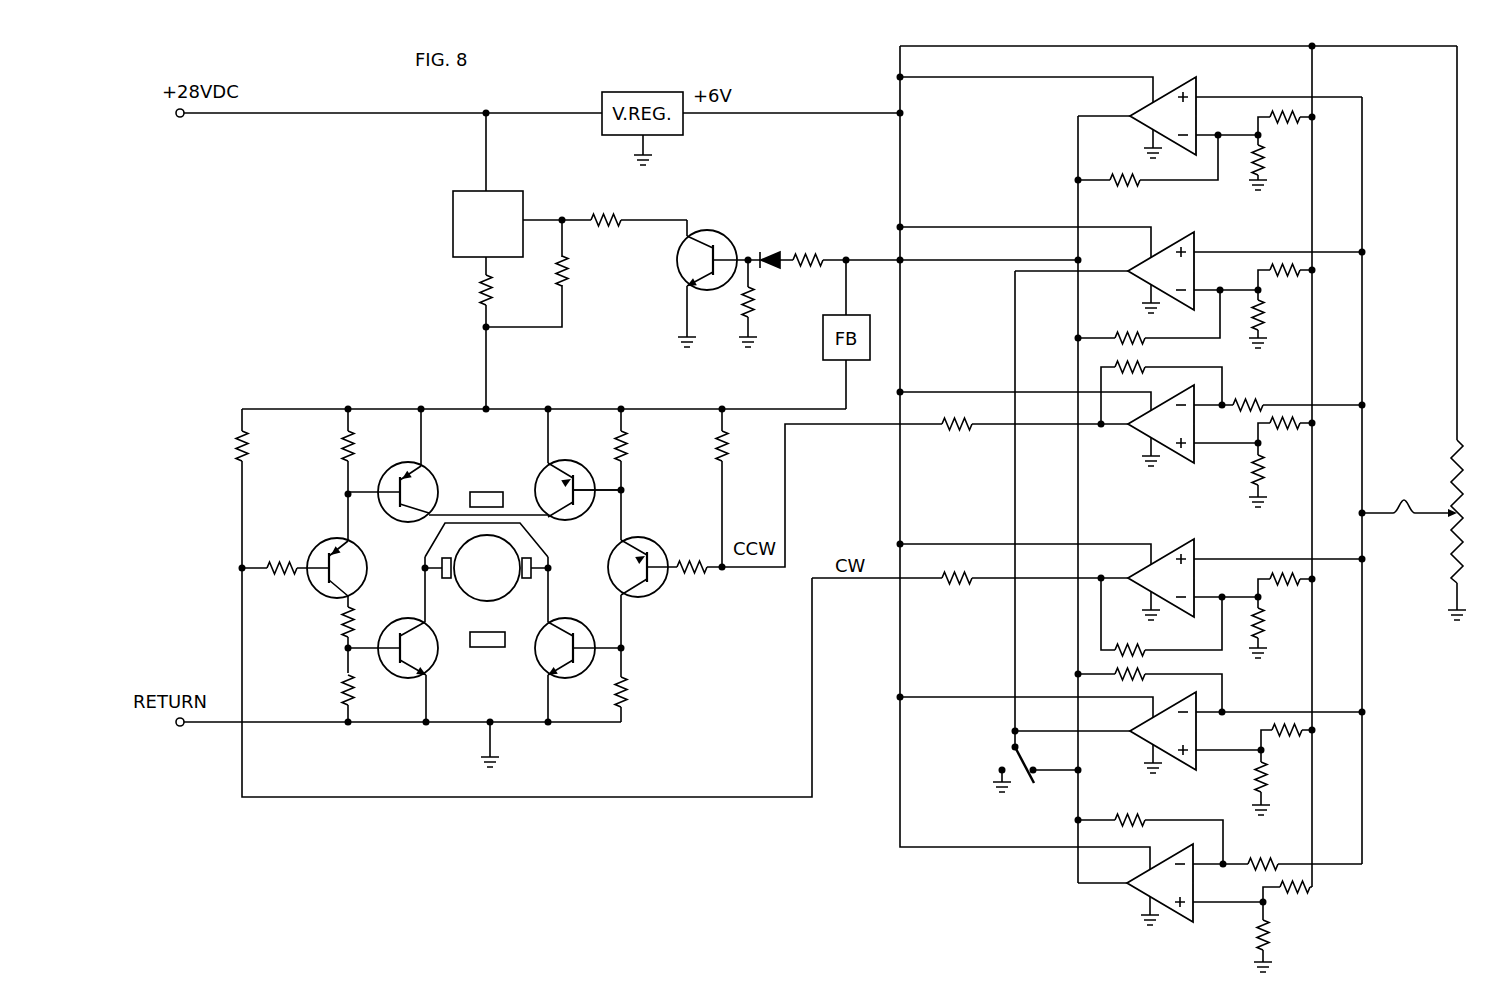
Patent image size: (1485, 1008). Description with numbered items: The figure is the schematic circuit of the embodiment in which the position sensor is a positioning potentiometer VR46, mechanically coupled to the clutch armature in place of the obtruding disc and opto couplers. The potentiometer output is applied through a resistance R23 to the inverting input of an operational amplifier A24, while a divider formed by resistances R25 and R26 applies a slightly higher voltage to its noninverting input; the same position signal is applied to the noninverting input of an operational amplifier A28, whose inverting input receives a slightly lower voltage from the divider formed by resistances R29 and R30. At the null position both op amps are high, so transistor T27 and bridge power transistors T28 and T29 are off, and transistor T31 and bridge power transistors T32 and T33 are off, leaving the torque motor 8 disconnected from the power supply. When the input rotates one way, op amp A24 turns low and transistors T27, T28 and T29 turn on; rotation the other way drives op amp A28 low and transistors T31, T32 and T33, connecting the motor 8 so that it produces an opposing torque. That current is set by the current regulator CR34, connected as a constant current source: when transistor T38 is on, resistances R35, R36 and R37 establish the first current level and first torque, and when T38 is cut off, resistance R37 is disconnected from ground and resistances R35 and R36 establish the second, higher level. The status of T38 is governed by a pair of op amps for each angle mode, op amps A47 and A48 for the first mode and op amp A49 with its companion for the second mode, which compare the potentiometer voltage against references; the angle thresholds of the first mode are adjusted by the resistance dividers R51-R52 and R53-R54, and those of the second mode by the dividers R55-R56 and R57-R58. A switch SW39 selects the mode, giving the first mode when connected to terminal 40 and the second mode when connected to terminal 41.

The current regulator CR34 is at (455, 241).
The resistance R35 is at (483, 294).
The resistance R36 is at (565, 265).
The resistance R37 is at (608, 215).
The transistor T38 is at (724, 236).
The bridge power transistor T32 is at (390, 516).
The transistor T31 is at (312, 589).
The bridge power transistor T33 is at (393, 674).
The bridge power transistor T28 is at (580, 519).
The bridge power transistor T29 is at (568, 676).
The transistor T27 is at (665, 585).
The torque motor 8 is at (518, 589).
The operational amplifier A49 is at (1146, 124).
The operational amplifier A47 is at (1146, 279).
The operational amplifier A24 is at (1148, 432).
The operational amplifier A28 is at (1150, 586).
The operational amplifier A48 is at (1152, 737).
The resistance R55 is at (1286, 125).
The resistance R56 is at (1262, 165).
The resistance R51 is at (1286, 278).
The resistance R52 is at (1262, 322).
The resistance R23 is at (1250, 405).
The resistance R25 is at (1285, 428).
The resistance R26 is at (1275, 482).
The resistance R29 is at (1285, 584).
The resistance R30 is at (1275, 635).
The resistance R53 is at (1288, 734).
The resistance R54 is at (1275, 785).
The resistance R57 is at (1292, 893).
The resistance R58 is at (1270, 940).
The positioning potentiometer VR46 is at (1450, 477).
The switch SW39 is at (1017, 762).
The terminal 40 is at (1034, 777).
The terminal 41 is at (1000, 770).